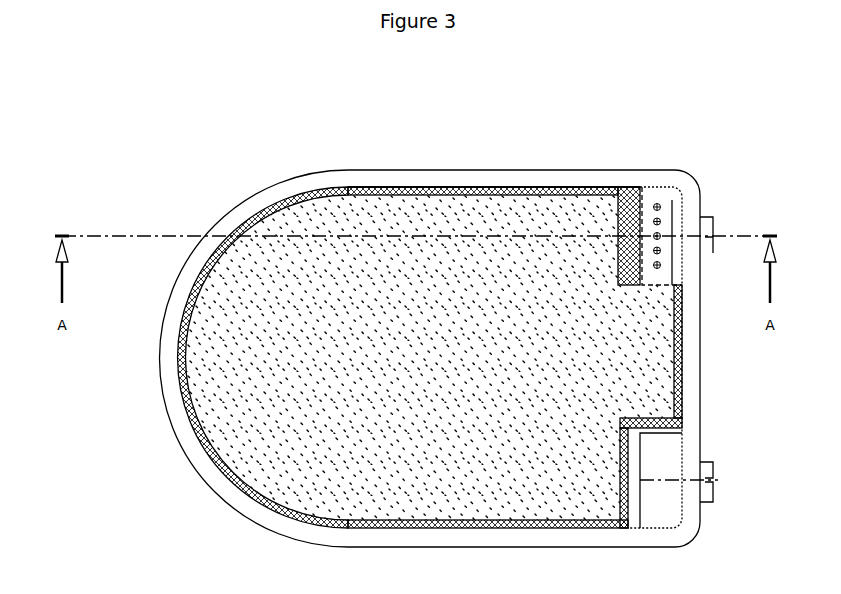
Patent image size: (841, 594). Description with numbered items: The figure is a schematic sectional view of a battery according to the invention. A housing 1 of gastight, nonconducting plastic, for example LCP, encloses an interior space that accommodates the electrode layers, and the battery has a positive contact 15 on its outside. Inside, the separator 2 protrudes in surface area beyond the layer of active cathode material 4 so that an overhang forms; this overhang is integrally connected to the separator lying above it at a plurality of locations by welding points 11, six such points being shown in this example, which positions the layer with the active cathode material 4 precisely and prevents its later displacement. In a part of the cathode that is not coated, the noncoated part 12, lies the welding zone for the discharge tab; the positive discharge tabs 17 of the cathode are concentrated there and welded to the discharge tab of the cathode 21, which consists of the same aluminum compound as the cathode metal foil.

The housing 1 is at (250, 197).
The separator 2 is at (622, 200).
The active cathode material 4 is at (243, 368).
The welding points 11 is at (220, 480).
The noncoated part 12 is at (647, 208).
The positive contact 15 is at (709, 228).
The discharge tabs 17 is at (665, 223).
The discharge tab of the cathode 21 is at (680, 226).